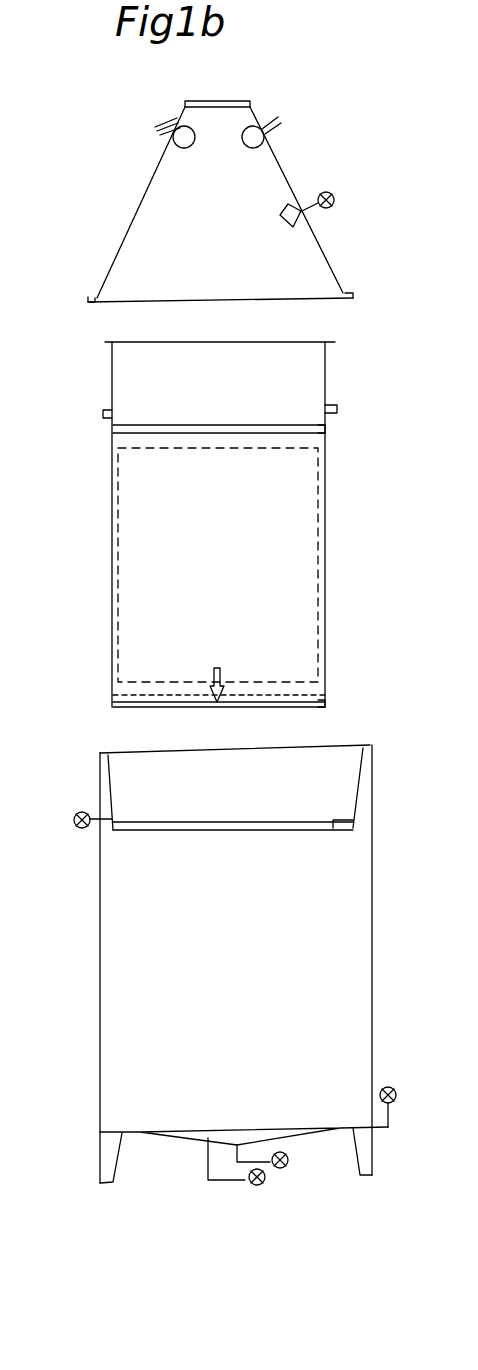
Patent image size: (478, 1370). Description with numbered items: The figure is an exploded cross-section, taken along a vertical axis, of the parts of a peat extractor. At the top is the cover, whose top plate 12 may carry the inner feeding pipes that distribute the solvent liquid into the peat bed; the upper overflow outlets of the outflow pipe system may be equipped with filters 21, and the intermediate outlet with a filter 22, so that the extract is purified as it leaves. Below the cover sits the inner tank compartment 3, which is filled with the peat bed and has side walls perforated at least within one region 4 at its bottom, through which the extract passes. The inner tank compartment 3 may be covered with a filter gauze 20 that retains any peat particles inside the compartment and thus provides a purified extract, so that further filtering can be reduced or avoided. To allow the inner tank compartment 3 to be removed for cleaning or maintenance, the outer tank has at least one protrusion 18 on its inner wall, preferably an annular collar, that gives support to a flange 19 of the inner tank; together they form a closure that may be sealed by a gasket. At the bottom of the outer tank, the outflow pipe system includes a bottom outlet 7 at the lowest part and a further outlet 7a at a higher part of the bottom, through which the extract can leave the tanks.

The top plate 12 is at (237, 100).
The filter 21 is at (182, 126).
The filter 22 is at (297, 200).
The flange 19 is at (102, 413).
The filter gauze 20 is at (327, 427).
The inner tank compartment 3 is at (233, 518).
The perforated region 4 is at (320, 515).
The protrusion 18 is at (100, 812).
The bottom outlet 7 is at (262, 1165).
The further outlet 7a is at (210, 1145).